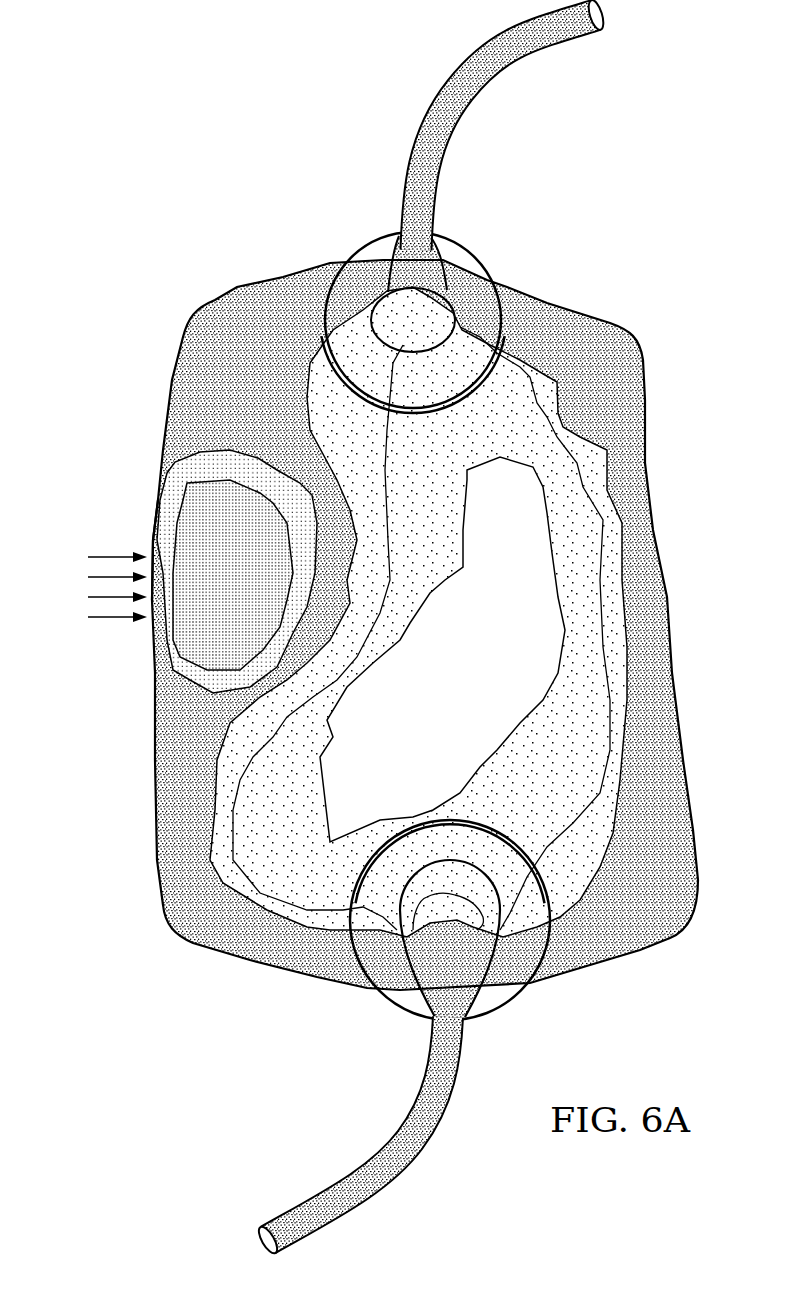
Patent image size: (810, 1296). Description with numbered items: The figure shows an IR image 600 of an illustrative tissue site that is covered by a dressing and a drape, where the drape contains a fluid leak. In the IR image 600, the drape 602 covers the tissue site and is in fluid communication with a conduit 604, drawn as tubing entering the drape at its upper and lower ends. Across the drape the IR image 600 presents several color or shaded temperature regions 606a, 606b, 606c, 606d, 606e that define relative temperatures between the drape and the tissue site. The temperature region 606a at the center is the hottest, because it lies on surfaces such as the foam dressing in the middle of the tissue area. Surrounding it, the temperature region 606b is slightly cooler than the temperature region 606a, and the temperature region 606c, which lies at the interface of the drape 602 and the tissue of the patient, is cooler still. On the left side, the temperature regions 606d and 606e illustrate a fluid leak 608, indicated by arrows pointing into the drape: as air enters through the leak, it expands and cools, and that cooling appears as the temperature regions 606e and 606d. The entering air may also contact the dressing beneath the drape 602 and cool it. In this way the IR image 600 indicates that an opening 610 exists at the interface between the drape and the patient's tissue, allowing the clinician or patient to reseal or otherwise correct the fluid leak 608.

The IR image 600 is at (389, 628).
The drape 602 is at (678, 720).
The conduit 604 is at (420, 148).
The temperature region 606a is at (488, 682).
The temperature region 606b is at (570, 794).
The temperature region 606c is at (272, 399).
The temperature region 606d is at (187, 485).
The temperature region 606e is at (248, 598).
The fluid leak 608 is at (80, 550).
The opening 610 is at (155, 537).